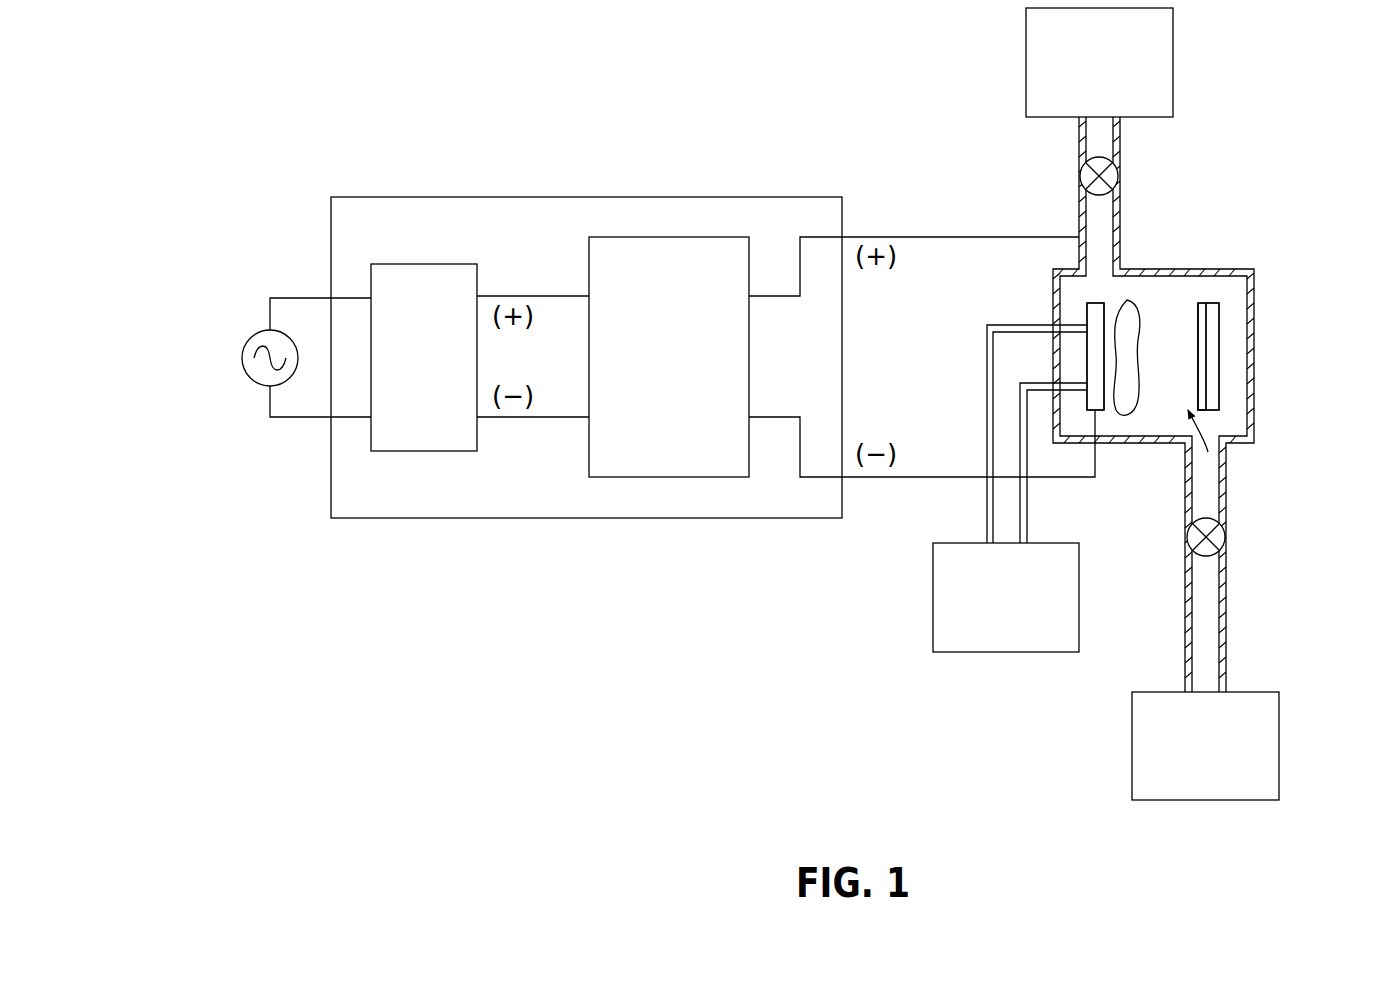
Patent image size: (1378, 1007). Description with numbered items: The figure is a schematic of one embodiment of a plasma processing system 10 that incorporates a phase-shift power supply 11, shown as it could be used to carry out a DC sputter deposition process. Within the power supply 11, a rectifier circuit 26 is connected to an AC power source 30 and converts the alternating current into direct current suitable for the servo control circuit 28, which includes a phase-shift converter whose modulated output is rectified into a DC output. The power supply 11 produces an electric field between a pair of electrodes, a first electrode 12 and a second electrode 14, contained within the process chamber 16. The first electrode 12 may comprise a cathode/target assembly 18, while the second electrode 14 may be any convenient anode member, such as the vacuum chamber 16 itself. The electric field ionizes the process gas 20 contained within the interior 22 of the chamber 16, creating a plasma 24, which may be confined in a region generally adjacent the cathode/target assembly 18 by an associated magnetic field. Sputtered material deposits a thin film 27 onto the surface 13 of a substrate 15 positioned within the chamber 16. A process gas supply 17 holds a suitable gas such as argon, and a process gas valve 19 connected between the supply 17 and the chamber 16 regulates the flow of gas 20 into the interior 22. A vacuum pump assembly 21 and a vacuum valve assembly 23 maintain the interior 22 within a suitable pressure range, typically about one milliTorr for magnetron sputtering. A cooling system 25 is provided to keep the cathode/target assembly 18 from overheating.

The plasma processing system 10 is at (287, 130).
The phase-shift power supply 11 is at (389, 523).
The first electrode 12 is at (1085, 308).
The surface 13 is at (1198, 312).
The second electrode 14 is at (1254, 376).
The substrate 15 is at (1219, 327).
The process chamber 16 is at (1258, 424).
The process gas supply 17 is at (1279, 741).
The cathode/target assembly 18 is at (1098, 303).
The process gas valve 19 is at (1227, 536).
The process gas 20 is at (1222, 452).
The vacuum pump assembly 21 is at (1173, 60).
The interior 22 is at (1180, 389).
The vacuum valve assembly 23 is at (1118, 175).
The plasma 24 is at (1140, 298).
The cooling system 25 is at (933, 598).
The rectifier circuit 26 is at (423, 264).
The thin film 27 is at (1198, 340).
The servo control circuit 28 is at (680, 237).
The AC power source 30 is at (248, 339).